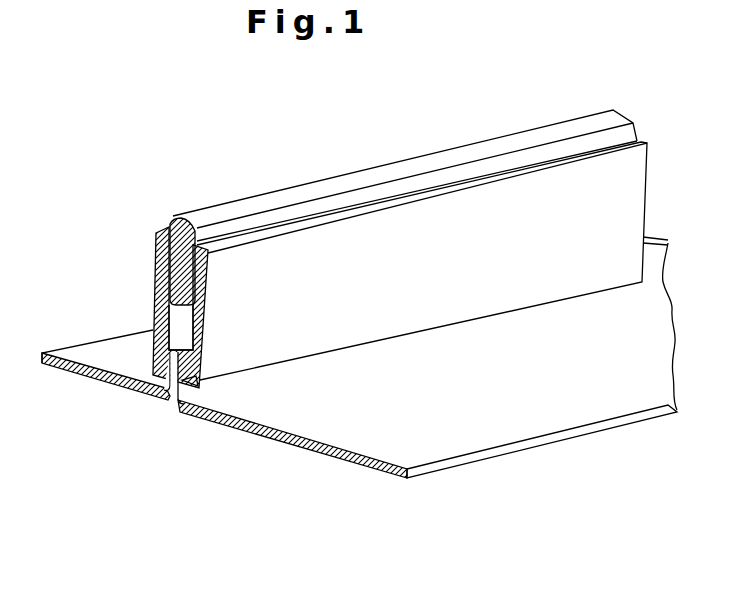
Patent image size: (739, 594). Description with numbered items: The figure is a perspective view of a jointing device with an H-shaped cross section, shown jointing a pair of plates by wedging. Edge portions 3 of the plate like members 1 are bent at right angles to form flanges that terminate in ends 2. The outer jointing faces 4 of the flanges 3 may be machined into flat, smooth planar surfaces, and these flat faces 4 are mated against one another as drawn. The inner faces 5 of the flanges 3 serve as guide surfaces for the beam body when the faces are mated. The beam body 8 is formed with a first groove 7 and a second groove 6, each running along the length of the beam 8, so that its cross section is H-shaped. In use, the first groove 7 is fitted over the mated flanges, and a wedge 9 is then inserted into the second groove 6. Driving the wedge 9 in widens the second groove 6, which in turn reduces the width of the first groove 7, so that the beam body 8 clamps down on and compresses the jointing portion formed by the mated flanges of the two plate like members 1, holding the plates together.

The plate like member 1 is at (348, 432).
The end of flange 2 is at (203, 348).
The edge portion (flange) 3 is at (200, 377).
The outer jointing face 4 is at (155, 392).
The inner face 5 is at (190, 397).
The second groove 6 is at (180, 318).
The first groove 7 is at (170, 355).
The beam body 8 is at (420, 233).
The wedge 9 is at (332, 187).